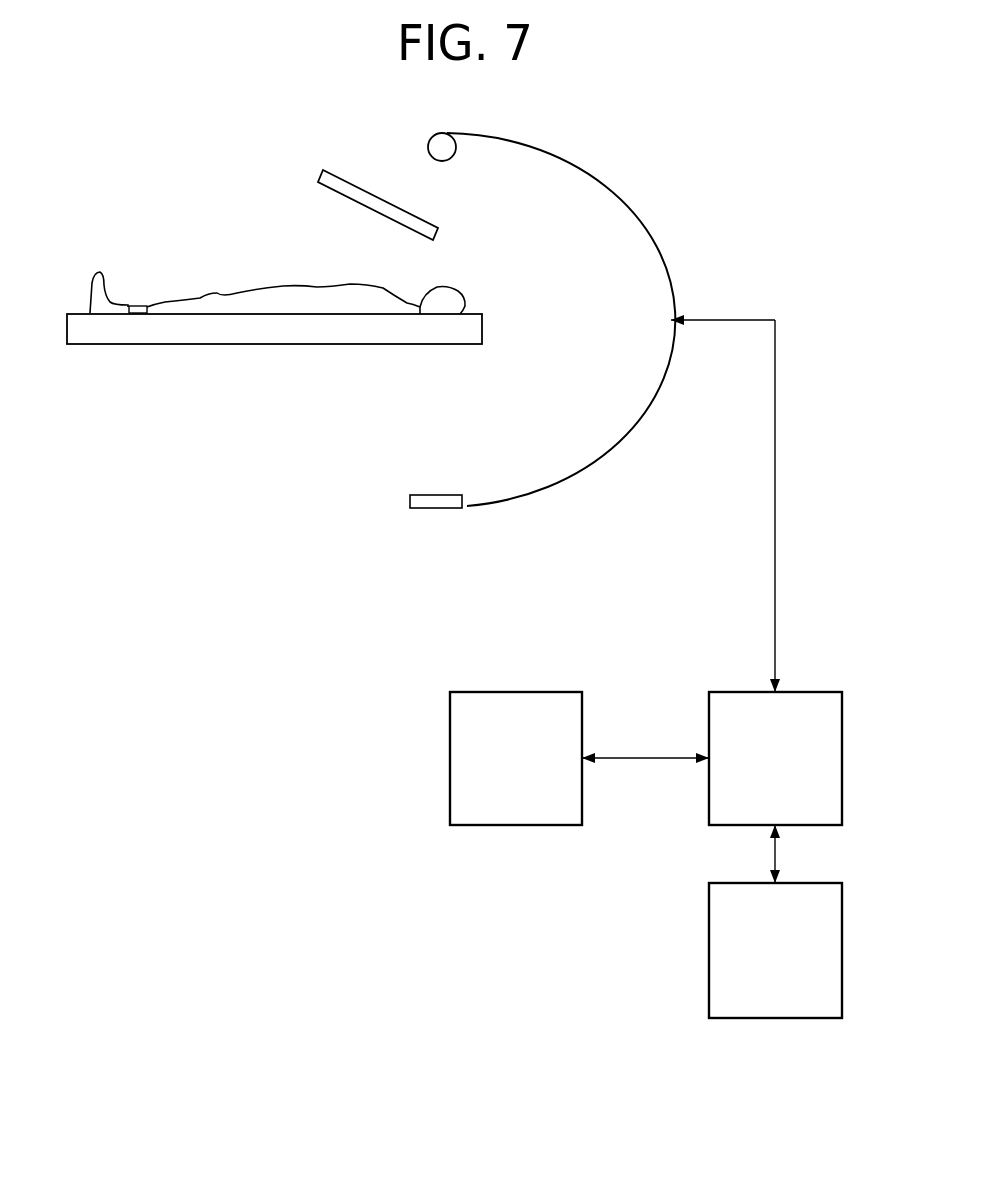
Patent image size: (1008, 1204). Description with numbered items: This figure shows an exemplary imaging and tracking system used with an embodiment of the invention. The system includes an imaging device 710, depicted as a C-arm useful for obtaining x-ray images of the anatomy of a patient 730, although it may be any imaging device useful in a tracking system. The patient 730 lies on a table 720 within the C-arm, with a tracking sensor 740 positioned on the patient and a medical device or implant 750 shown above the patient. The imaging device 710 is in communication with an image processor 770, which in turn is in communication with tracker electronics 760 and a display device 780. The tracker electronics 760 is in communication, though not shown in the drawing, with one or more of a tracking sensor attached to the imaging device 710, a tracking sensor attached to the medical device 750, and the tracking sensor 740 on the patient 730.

The imaging device 710 is at (622, 207).
The table 720 is at (113, 346).
The patient 730 is at (465, 305).
The tracking sensor 740 is at (148, 306).
The medical device or implant 750 is at (343, 180).
The tracker electronics 760 is at (709, 910).
The image processor 770 is at (709, 728).
The display device 780 is at (450, 755).